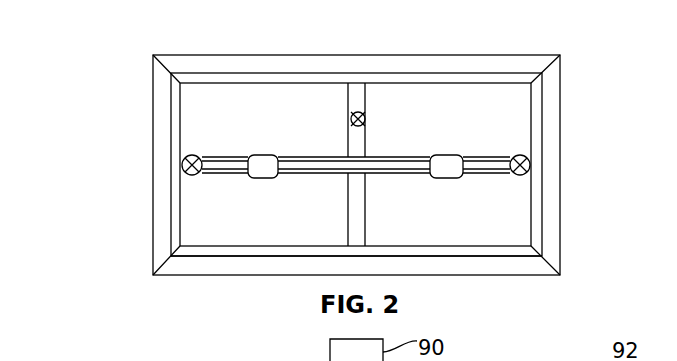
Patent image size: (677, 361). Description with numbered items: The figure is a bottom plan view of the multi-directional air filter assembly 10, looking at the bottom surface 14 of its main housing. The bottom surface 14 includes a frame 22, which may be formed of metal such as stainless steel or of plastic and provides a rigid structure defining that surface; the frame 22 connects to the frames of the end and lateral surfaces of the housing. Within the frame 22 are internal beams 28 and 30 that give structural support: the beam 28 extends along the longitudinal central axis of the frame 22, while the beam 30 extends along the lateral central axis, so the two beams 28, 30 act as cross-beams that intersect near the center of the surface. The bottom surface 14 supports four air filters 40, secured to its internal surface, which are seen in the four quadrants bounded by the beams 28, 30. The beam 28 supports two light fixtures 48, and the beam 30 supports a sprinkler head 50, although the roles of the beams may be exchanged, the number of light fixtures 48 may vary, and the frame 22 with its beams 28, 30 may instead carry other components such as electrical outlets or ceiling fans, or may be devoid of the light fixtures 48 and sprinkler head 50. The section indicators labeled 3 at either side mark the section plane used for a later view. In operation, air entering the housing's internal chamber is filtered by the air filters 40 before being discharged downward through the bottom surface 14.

The multi-directional air filter assembly 10 is at (120, 55).
The bottom surface 14 is at (500, 108).
The frame 22 is at (255, 266).
The internal beam 28 is at (295, 178).
The internal beam 30 is at (355, 239).
The air filter 40 is at (221, 115).
The light fixture 48 is at (265, 154).
The sprinkler head 50 is at (362, 114).
The section line 3- 3 is at (75, 165).